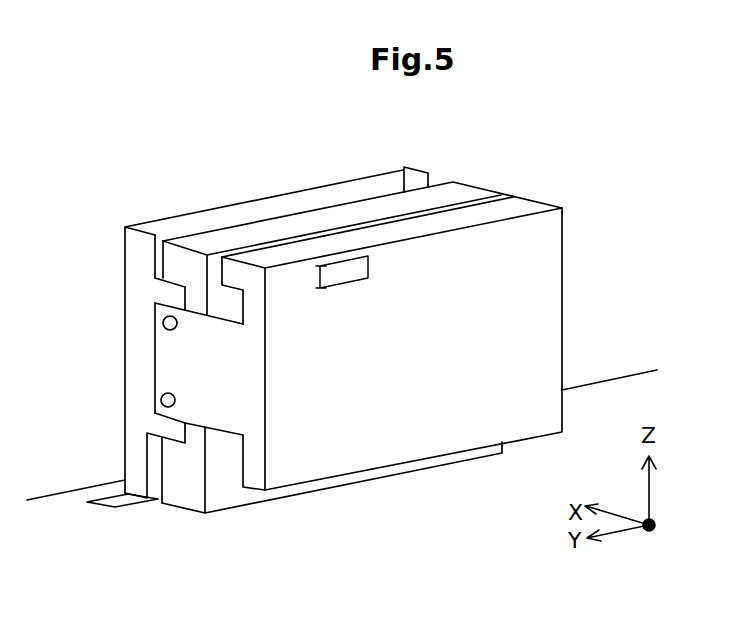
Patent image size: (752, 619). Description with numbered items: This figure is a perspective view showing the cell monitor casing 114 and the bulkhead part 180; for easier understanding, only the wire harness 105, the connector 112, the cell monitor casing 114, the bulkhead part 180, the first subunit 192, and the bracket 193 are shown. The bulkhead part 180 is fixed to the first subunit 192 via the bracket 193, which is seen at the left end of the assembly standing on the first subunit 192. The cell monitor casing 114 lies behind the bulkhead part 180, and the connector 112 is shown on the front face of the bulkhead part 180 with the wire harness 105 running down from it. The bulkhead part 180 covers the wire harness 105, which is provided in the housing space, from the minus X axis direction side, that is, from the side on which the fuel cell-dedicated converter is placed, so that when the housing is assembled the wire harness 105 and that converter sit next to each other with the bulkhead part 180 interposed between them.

The wire harness 105 is at (380, 492).
The connector 112 is at (378, 510).
The cell monitor casing 114 is at (450, 193).
The bulkhead part 180 is at (538, 256).
The first subunit 192 is at (107, 541).
The bracket 193 is at (280, 194).